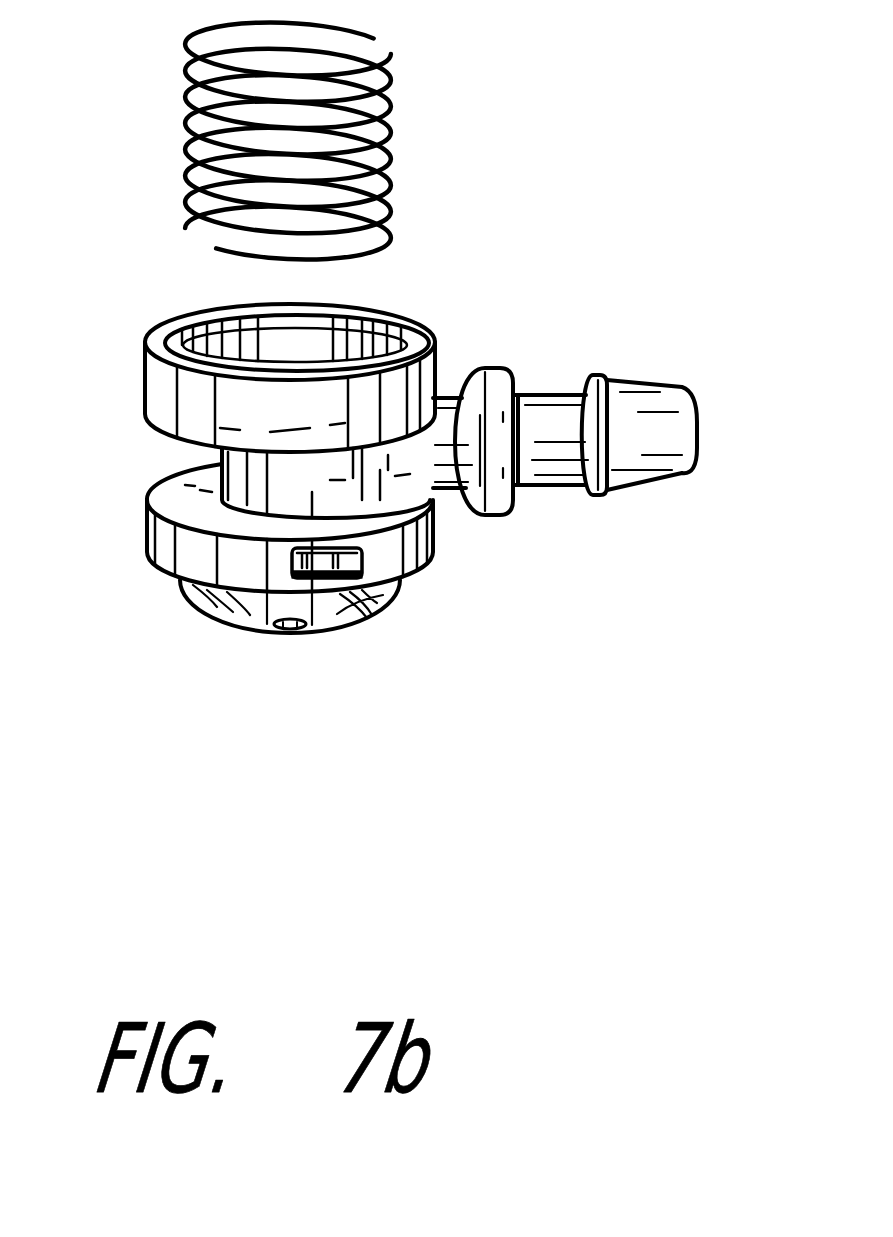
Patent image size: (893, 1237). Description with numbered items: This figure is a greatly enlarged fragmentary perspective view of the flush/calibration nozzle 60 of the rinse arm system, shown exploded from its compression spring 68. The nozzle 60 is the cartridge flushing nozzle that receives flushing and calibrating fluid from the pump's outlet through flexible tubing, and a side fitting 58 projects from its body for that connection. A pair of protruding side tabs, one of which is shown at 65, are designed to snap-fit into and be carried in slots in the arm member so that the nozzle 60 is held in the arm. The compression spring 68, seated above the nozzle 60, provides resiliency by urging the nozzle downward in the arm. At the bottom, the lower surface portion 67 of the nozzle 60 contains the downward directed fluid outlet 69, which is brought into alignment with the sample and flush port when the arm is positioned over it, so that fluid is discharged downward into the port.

The hose barb fitting 58 is at (636, 391).
The flush/calibration nozzle 60 is at (470, 266).
The protruding side tab 65 is at (352, 583).
The lower surface portion 67 is at (212, 603).
The compression spring 68 is at (398, 110).
The downward directed fluid outlet 69 is at (287, 629).